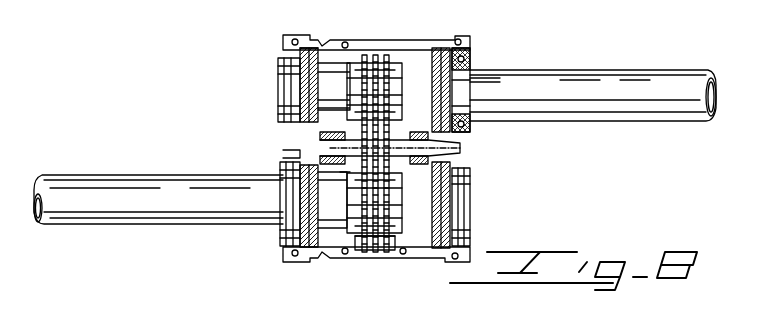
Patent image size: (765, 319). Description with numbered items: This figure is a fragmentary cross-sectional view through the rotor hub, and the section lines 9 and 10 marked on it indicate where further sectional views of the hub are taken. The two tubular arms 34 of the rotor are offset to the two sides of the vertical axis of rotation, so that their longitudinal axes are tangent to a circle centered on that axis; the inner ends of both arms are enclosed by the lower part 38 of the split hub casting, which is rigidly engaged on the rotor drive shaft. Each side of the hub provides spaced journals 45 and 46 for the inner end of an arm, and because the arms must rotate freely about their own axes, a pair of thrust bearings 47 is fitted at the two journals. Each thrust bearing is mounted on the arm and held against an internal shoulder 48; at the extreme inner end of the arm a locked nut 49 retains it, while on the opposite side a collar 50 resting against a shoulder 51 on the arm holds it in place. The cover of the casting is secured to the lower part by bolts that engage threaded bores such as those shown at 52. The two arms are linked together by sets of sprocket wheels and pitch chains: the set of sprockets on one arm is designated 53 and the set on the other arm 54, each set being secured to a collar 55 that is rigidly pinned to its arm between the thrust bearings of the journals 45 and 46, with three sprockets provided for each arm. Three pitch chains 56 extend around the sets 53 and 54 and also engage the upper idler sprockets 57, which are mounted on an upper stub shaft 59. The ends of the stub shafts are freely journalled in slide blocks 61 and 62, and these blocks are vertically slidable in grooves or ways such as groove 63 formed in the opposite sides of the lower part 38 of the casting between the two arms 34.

The section line 9— 9 is at (420, 15).
The section line 10— 10 is at (252, 120).
The tubular arm 34 is at (632, 80).
The lower part 38 is at (310, 258).
The journal 45 is at (321, 46).
The journal 46 is at (439, 49).
The thrust bearing 47 is at (308, 70).
The internal shoulder 48 is at (357, 46).
The locked nut 49 is at (292, 88).
The collar 50 is at (470, 72).
The shoulder 51 is at (477, 78).
The threaded bore 52 is at (460, 42).
The set of sprockets 53 is at (388, 117).
The set of sprockets 54 is at (388, 189).
The collar 55 is at (393, 64).
The pitch chains 56 is at (373, 240).
The upper idler sprockets 57 is at (356, 173).
The upper stub shaft 59 is at (458, 153).
The slide block 61 is at (322, 144).
The slide block 62 is at (458, 142).
The groove 63 is at (292, 154).